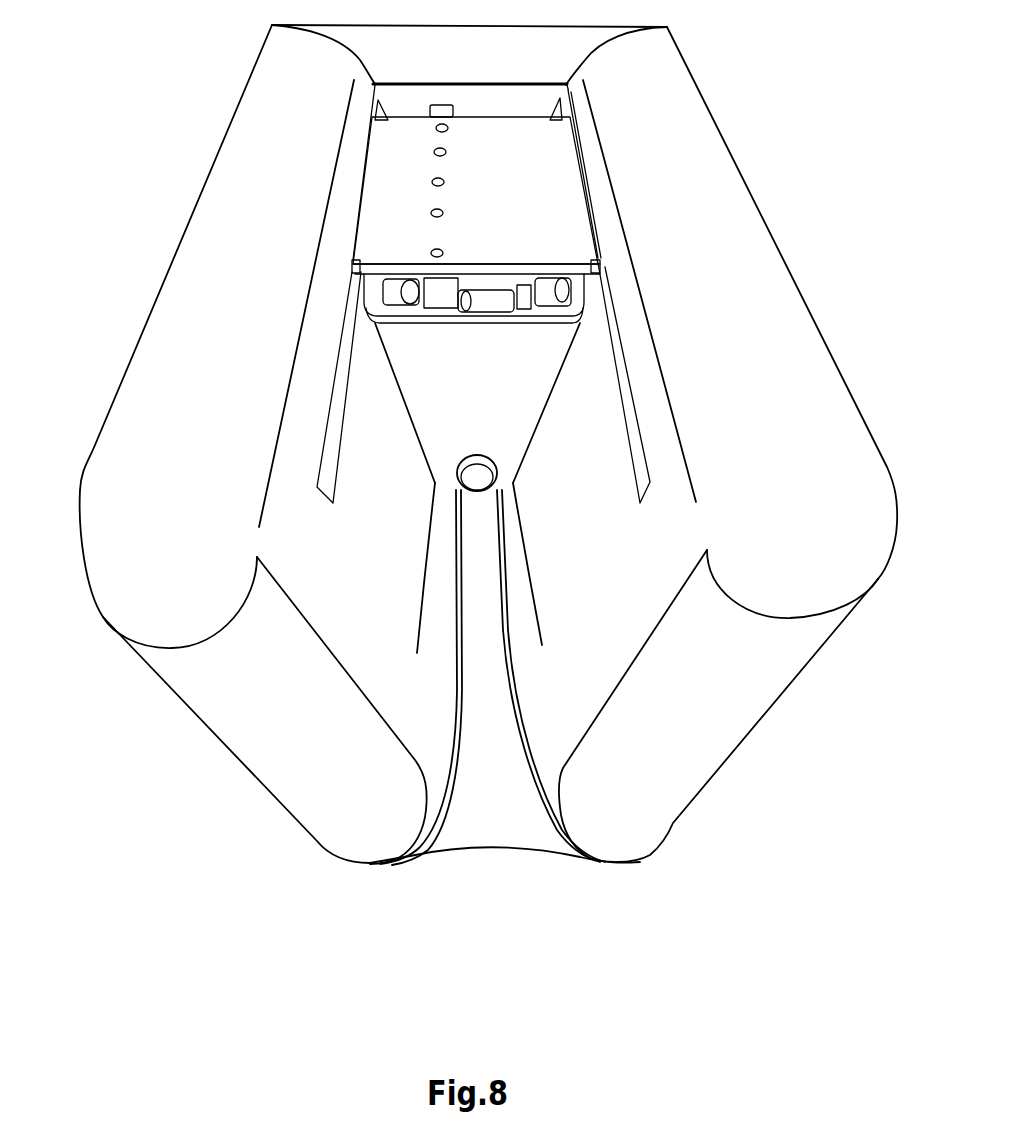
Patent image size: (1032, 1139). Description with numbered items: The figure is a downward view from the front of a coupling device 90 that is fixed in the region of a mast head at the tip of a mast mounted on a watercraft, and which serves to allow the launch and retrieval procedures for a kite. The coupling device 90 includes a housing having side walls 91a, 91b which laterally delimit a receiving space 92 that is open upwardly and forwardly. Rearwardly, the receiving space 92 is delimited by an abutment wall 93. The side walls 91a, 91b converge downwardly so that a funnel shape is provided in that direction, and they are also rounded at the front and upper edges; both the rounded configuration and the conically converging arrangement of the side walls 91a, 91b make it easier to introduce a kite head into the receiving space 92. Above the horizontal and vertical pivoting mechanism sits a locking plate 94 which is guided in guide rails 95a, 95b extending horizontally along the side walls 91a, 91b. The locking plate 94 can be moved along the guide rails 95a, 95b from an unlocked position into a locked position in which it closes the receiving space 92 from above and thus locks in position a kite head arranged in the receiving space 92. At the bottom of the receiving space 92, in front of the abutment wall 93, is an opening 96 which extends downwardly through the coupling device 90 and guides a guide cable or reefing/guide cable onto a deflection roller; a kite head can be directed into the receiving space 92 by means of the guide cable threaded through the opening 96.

The coupling device 90 is at (740, 58).
The side wall 91a is at (378, 563).
The side wall 91b is at (625, 566).
The receiving space 92 is at (498, 755).
The abutment wall 93 is at (497, 401).
The locking plate 94 is at (524, 204).
The guide rail 95a is at (337, 355).
The guide rail 95b is at (615, 318).
The opening 96 is at (457, 473).